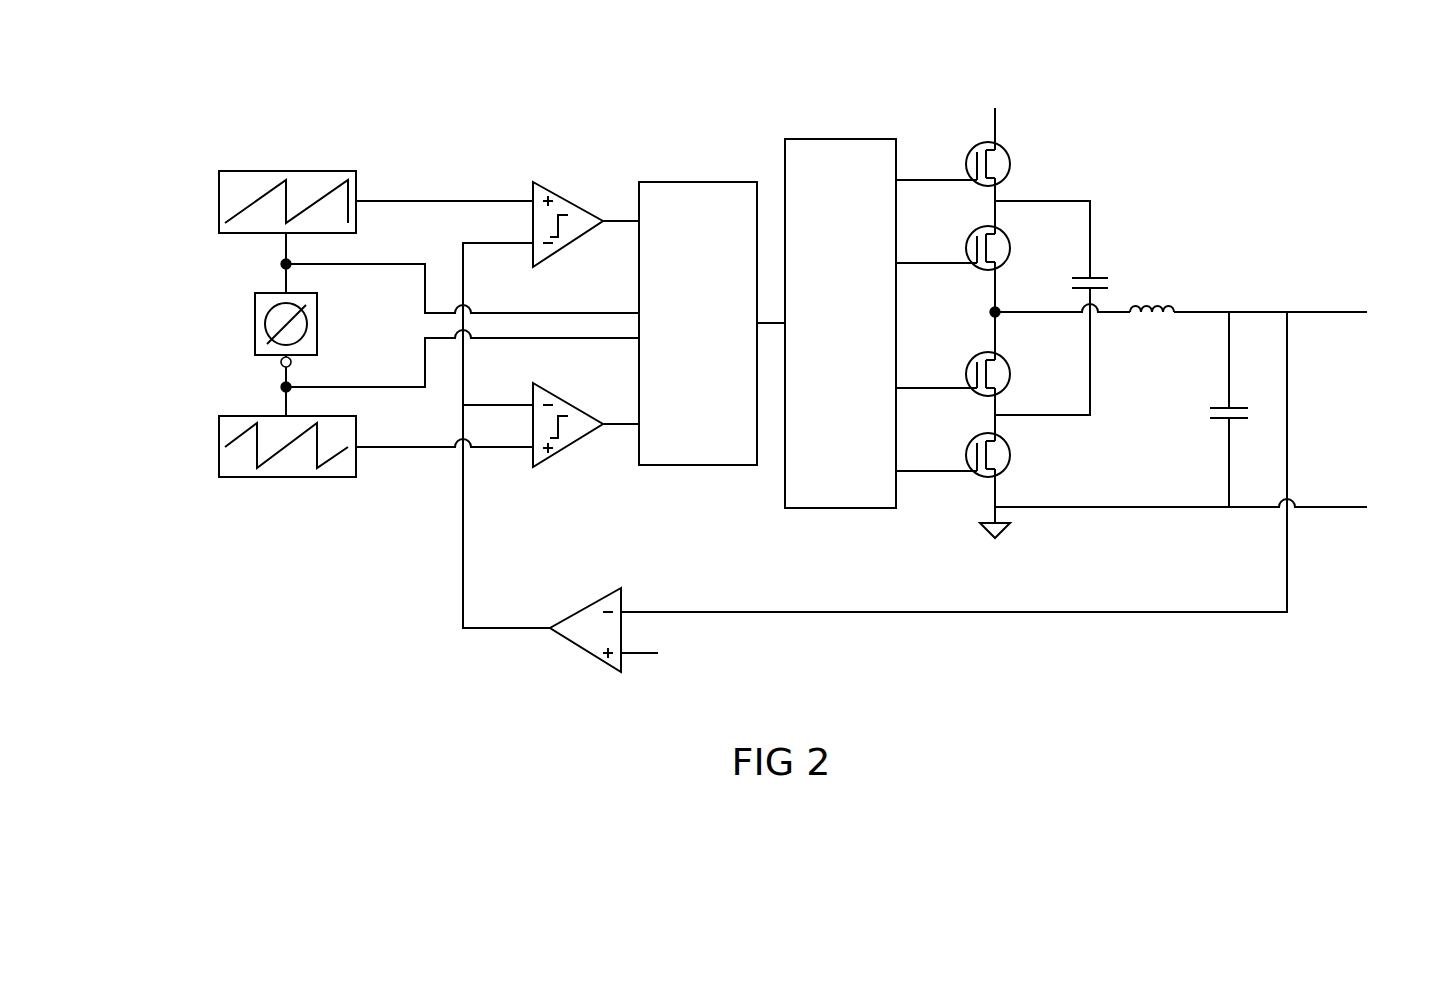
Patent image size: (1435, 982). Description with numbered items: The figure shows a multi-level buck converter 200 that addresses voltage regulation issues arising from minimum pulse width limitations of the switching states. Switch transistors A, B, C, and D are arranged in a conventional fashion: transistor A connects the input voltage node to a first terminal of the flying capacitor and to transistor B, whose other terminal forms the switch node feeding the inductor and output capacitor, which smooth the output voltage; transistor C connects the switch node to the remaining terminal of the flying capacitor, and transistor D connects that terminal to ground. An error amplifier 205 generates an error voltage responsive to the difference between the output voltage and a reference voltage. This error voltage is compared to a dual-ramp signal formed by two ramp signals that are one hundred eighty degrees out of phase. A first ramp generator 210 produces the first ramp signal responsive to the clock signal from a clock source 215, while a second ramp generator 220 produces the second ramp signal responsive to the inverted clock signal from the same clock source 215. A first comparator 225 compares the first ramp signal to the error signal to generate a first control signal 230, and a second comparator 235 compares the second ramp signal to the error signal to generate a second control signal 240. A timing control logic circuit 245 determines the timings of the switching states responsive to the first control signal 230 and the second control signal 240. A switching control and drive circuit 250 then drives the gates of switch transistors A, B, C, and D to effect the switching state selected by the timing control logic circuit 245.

The multi-level buck converter 200 is at (807, 44).
The error amplifier 205 is at (578, 650).
The first ramp generator 210 is at (217, 205).
The clock source 215 is at (253, 325).
The second ramp generator 220 is at (217, 447).
The first comparator 225 is at (569, 198).
The first control signal 230 is at (612, 224).
The second comparator 235 is at (547, 458).
The second control signal 240 is at (612, 426).
The timing control logic circuit 245 is at (700, 467).
The switching control and drive circuit 250 is at (838, 509).